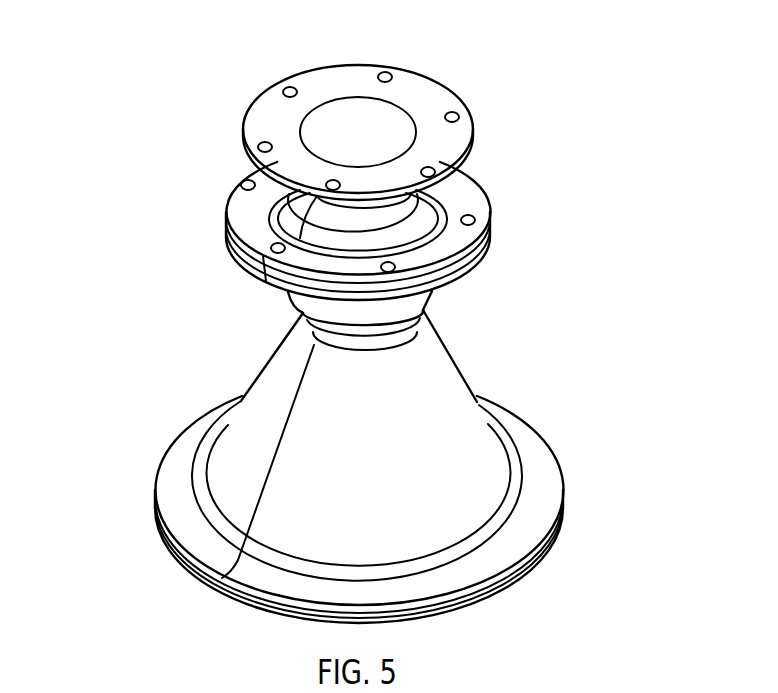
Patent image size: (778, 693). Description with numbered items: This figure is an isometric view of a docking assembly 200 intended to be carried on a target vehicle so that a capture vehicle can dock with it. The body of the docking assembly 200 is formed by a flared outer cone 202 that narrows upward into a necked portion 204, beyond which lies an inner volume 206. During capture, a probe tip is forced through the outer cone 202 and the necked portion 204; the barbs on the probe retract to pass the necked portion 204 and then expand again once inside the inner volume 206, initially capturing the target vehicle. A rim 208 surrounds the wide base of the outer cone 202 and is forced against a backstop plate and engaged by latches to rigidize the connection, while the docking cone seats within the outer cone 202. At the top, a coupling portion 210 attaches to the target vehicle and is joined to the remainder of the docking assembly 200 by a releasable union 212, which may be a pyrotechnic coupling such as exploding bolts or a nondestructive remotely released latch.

The docking assembly 200 is at (131, 91).
The outer cone 202 is at (242, 448).
The necked portion 204 is at (300, 338).
The inner volume 206 is at (482, 623).
The rim 208 is at (222, 555).
The coupling portion 210 is at (285, 165).
The releasable union 212 is at (247, 255).